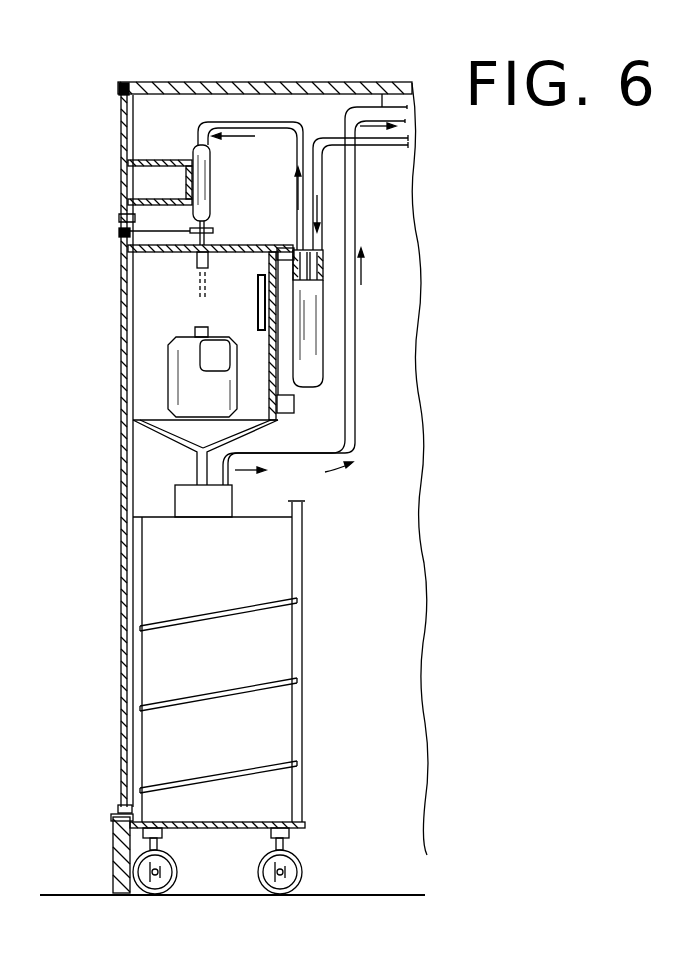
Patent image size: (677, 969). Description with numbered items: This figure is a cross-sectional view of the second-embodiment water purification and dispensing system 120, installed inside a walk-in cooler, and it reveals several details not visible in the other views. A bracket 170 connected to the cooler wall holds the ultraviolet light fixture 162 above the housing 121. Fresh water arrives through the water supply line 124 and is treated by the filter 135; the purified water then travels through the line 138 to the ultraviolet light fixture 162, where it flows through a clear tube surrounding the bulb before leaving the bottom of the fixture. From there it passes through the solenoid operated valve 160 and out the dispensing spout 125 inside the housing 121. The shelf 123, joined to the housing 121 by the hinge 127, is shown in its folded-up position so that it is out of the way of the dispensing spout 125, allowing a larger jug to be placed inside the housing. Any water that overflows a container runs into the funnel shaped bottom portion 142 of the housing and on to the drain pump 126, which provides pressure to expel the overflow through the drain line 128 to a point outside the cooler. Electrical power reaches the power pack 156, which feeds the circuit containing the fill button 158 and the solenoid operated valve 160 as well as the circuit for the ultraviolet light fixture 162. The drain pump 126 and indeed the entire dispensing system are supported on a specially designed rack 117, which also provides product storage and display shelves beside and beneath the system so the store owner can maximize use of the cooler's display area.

The rack 117 is at (160, 665).
The water purification and dispensing system 120 is at (74, 288).
The housing 121 is at (120, 243).
The shelf 123 is at (258, 318).
The water supply line 124 is at (382, 144).
The dispensing spout 125 is at (197, 257).
The drain pump 126 is at (227, 497).
The hinge 127 is at (262, 330).
The drain line 128 is at (377, 83).
The filter 135 is at (313, 350).
The line 138 is at (257, 121).
The funnel shaped bottom portion 142 is at (153, 430).
The power pack 156 is at (295, 405).
The fill button 158 is at (115, 230).
The solenoid operated valve 160 is at (202, 229).
The ultraviolet light fixture 162 is at (195, 148).
The bracket 170 is at (123, 218).